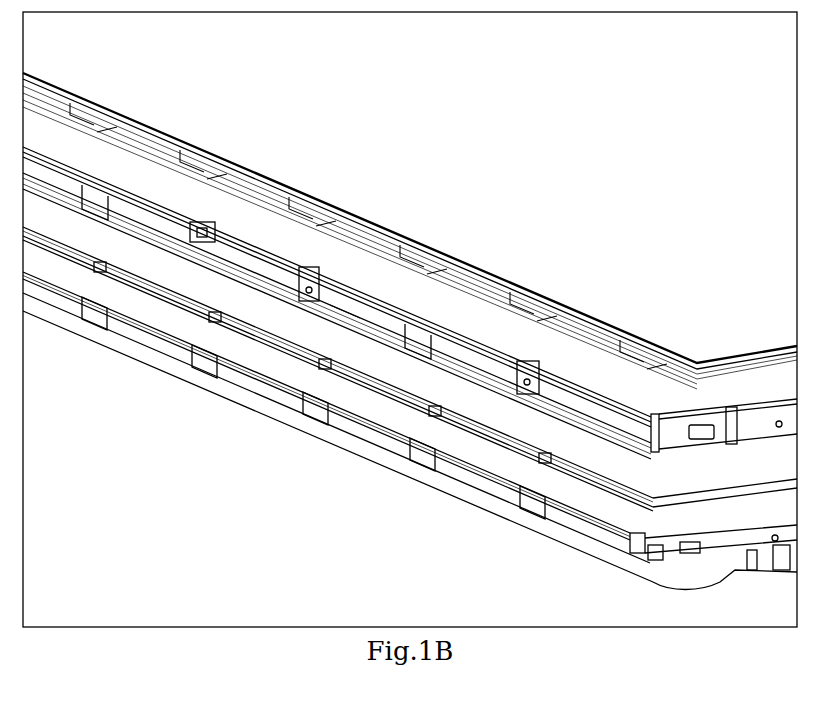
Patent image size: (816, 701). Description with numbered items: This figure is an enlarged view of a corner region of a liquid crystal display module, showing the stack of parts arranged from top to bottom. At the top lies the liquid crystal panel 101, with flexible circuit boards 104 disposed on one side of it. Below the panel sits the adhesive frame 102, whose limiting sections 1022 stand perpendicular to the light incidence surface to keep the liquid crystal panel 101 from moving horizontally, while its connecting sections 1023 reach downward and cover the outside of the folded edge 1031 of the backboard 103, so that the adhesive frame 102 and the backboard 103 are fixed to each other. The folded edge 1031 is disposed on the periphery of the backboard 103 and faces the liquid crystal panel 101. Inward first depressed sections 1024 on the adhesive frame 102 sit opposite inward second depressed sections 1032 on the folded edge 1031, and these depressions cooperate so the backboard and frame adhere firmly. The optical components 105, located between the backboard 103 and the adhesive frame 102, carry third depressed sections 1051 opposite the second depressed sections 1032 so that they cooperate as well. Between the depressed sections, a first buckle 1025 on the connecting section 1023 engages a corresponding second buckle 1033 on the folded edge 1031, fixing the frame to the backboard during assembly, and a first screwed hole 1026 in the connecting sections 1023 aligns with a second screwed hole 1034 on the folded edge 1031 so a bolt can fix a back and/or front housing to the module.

The liquid crystal panel 101 is at (578, 222).
The adhesive frame 102 is at (687, 443).
The backboard 103 is at (397, 471).
The flexible circuit boards 104 is at (279, 192).
The optical components 105 is at (522, 430).
The limiting sections 1022 is at (325, 279).
The connecting sections 1023 is at (345, 313).
The first depressed sections 1024 is at (133, 197).
The first buckle 1025 is at (648, 414).
The first screwed hole 1026 is at (541, 372).
The folded edge 1031 is at (678, 563).
The second depressed sections 1032 is at (152, 334).
The second buckle 1033 is at (193, 366).
The second screwed hole 1034 is at (314, 421).
The third depressed sections 1051 is at (375, 378).